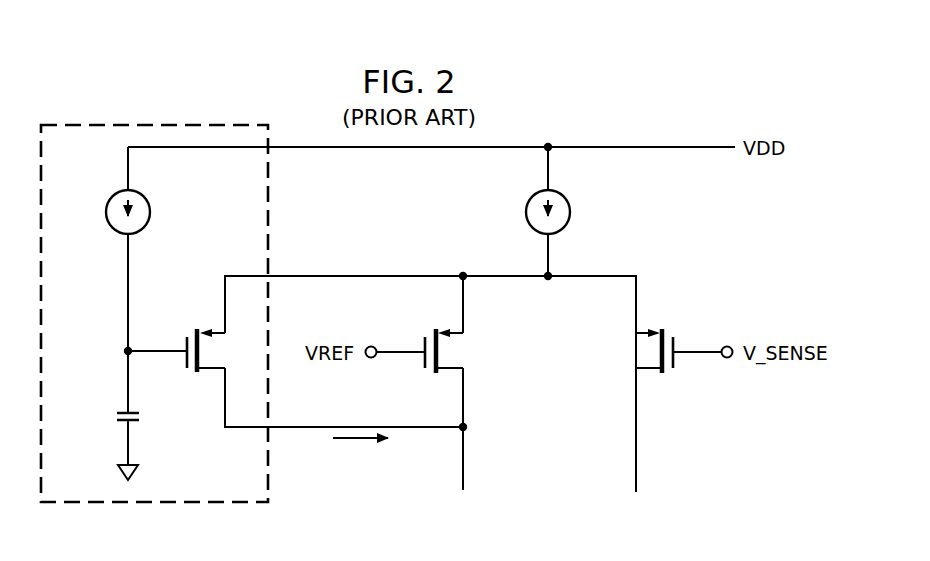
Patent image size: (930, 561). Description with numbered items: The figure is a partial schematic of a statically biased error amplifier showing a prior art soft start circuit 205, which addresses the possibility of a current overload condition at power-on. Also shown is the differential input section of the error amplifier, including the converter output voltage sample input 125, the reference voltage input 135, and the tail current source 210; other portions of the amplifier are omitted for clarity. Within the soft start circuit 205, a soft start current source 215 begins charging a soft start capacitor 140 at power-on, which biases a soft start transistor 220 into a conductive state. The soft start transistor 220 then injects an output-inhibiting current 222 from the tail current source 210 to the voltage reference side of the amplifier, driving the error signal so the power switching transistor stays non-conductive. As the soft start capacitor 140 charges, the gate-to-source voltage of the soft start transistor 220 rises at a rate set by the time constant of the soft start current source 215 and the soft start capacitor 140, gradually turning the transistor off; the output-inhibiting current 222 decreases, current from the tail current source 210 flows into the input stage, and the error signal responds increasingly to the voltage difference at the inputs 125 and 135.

The soft start circuit 205 is at (126, 121).
The soft start current source 215 is at (150, 212).
The tail current source 210 is at (571, 211).
The soft start transistor 220 is at (183, 342).
The soft start capacitor 140 is at (140, 416).
The reference voltage input 135 is at (400, 356).
The converter output voltage sample input 125 is at (698, 355).
The output-inhibiting current 222 is at (362, 443).